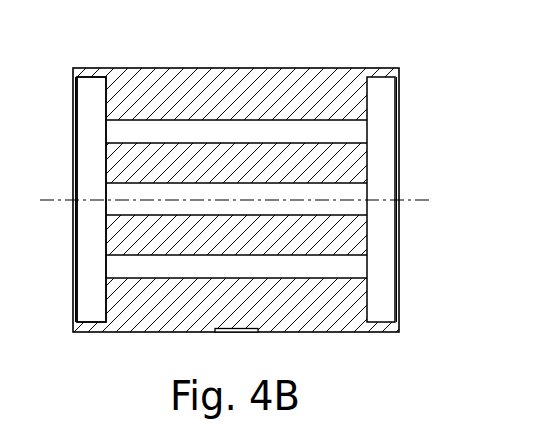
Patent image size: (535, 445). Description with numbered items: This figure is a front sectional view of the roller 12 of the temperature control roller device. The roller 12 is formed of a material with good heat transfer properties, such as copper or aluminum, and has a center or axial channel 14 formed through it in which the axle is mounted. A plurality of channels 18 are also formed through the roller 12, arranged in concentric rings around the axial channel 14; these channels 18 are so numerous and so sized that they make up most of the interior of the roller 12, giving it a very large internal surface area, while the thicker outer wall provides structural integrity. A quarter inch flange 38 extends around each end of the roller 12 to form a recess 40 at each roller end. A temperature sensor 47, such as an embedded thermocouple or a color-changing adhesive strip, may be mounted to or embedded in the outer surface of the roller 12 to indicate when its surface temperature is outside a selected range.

The roller 12 is at (208, 52).
The axial channel 14 is at (367, 190).
The channels 18 is at (352, 128).
The flange 38 is at (95, 67).
The recess 40 is at (80, 133).
The temperature sensor 47 is at (237, 332).